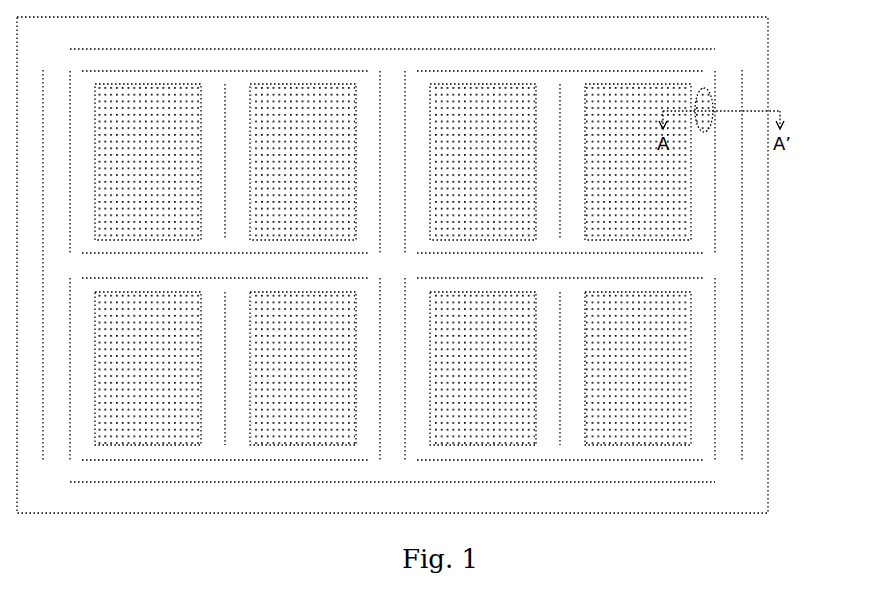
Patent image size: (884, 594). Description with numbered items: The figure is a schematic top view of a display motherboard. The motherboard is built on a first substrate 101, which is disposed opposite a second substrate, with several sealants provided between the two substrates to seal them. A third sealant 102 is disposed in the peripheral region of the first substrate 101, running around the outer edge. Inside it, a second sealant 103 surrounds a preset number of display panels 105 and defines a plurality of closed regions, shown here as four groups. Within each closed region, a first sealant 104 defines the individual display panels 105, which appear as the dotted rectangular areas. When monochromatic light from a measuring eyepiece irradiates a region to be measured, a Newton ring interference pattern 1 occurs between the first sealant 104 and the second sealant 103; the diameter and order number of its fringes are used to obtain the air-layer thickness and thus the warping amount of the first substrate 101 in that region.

The Newton ring interference pattern 1 is at (708, 90).
The first substrate 101 is at (757, 333).
The third sealant 102 is at (743, 361).
The second sealant 103 is at (716, 393).
The first sealant 104 is at (692, 420).
The display panel 105 is at (662, 435).